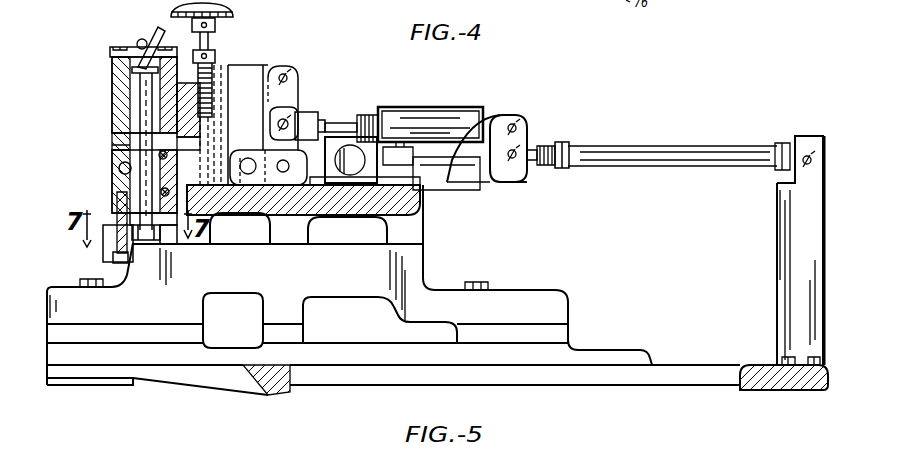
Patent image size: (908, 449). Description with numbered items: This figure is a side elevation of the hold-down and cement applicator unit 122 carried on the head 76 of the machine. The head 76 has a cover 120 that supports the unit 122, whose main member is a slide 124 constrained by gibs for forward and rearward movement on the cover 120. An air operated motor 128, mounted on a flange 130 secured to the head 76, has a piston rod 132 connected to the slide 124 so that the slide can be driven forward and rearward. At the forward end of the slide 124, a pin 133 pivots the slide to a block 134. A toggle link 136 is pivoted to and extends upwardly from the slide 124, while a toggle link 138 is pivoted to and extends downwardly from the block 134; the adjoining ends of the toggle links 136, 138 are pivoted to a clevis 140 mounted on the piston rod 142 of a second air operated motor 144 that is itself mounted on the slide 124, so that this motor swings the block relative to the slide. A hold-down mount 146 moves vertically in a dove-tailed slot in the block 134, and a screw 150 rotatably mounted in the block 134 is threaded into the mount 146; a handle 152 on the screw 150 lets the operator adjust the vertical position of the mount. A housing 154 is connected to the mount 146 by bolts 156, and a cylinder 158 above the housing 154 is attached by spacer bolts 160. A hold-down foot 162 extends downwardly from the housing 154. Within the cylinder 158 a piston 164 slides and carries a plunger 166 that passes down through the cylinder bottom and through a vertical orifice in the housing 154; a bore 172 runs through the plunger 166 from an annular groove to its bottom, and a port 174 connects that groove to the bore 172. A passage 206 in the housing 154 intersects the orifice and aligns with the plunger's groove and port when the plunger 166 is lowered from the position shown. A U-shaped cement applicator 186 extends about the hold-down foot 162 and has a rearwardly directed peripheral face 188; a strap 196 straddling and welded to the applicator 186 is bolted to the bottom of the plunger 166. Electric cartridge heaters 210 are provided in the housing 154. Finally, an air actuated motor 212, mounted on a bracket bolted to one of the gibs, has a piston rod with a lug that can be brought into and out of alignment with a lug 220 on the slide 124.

The head 76 is at (770, 375).
The cover 120 is at (407, 203).
The hold-down and cement applicator unit 122 is at (482, 95).
The slide 124 is at (480, 200).
The air operated motor 128 is at (650, 158).
The flange 130 is at (795, 222).
The piston rod 132 is at (556, 144).
The pin 133 is at (250, 162).
The block 134 is at (245, 73).
The toggle link 136 is at (270, 125).
The toggle link 138 is at (298, 92).
The clevis 140 is at (312, 112).
The piston rod 142 is at (349, 115).
The air operated motor 144 is at (445, 117).
The hold-down mount 146 is at (170, 68).
The screw 150 is at (212, 64).
The handle 152 is at (228, 10).
The housing 154 is at (113, 146).
The bolts 156 is at (200, 135).
The cylinder 158 is at (113, 80).
The spacer bolts 160 is at (113, 132).
The hold-down foot 162 is at (118, 258).
The piston 164 is at (138, 52).
The plunger 166 is at (140, 203).
The bore 172 is at (142, 165).
The port 174 is at (128, 152).
The U-shaped cement applicator 186 is at (108, 248).
The peripheral face 188 is at (178, 237).
The strap 196 is at (152, 240).
The passage 206 is at (125, 180).
The electric cartridge heaters 210 is at (200, 223).
The air actuated motor 212 is at (360, 168).
The lug 220 is at (478, 140).